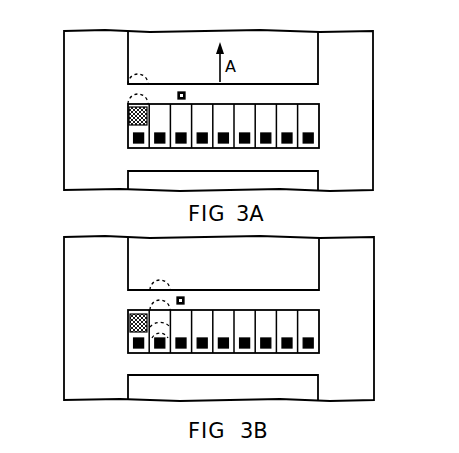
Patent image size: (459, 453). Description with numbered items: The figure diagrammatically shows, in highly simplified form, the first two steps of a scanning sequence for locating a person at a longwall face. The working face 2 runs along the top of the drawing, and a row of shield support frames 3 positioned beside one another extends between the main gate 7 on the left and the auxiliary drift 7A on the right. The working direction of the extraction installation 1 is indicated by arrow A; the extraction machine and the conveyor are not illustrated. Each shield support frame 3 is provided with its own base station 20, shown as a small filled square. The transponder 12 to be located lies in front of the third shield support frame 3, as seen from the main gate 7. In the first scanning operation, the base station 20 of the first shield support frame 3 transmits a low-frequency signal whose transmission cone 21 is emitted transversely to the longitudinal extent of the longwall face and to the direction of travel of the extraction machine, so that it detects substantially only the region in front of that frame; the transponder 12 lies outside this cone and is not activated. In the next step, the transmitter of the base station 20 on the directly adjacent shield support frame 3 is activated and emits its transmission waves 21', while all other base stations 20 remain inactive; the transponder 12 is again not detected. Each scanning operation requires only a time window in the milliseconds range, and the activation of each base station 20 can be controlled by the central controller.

In FIG. 3A, the extraction installation 1 is at (116, 110).
In FIG. 3B, the extraction installation 1 is at (138, 323).
In FIG. 3A, the working face 2 is at (315, 67).
In FIG. 3B, the working face 2 is at (315, 264).
In FIG. 3A, the shield support frame 3 is at (128, 133).
In FIG. 3B, the shield support frame 3 is at (130, 336).
In FIG. 3A, the main gate 7 is at (104, 86).
In FIG. 3B, the main gate 7 is at (98, 314).
In FIG. 3A, the auxiliary drift 7A is at (358, 126).
In FIG. 3B, the auxiliary drift 7A is at (352, 332).
In FIG. 3A, the transponder 12 is at (184, 84).
In FIG. 3B, the transponder 12 is at (192, 294).
In FIG. 3A, the base station 20 is at (177, 146).
In FIG. 3B, the base station 20 is at (183, 348).
In FIG. 3A, the transmission cone 21 is at (143, 79).
In FIG. 3B, the transmission waves 21' is at (167, 295).